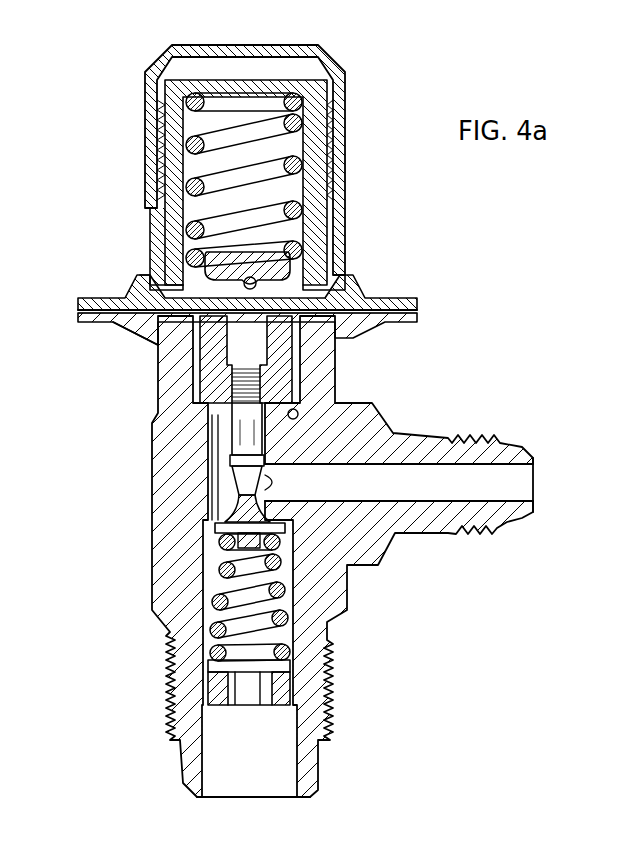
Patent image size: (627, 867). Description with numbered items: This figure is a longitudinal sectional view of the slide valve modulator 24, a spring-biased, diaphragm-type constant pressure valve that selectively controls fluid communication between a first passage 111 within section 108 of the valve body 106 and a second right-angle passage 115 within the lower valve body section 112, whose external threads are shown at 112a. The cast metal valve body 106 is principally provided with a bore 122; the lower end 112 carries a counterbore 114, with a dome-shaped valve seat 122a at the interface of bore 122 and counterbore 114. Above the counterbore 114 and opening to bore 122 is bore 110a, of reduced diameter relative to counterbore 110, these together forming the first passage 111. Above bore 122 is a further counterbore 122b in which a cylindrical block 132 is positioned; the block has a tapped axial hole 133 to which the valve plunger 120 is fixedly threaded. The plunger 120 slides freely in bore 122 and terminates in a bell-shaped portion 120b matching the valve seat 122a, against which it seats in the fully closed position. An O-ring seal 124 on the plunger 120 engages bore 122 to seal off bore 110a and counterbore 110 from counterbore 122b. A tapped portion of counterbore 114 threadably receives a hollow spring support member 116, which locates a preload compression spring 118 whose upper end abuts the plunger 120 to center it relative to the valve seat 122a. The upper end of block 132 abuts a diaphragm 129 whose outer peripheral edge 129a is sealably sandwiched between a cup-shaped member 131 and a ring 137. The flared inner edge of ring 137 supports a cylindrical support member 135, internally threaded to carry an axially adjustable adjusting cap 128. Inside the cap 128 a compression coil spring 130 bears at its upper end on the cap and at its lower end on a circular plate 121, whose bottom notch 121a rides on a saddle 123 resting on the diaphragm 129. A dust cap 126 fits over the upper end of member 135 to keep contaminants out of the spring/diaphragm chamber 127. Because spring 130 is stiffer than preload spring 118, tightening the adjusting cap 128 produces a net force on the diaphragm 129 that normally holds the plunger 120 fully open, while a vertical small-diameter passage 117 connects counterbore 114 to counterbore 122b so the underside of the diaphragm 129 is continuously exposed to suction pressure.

The slide valve modulator 24 is at (504, 347).
The valve body 106 is at (389, 405).
The valve body section 108 is at (512, 457).
The counterbore 110 is at (424, 444).
The bore 110a is at (330, 484).
The first passage 111 is at (500, 487).
The valve body section 112 is at (320, 737).
The external threads 112a is at (335, 708).
The counterbore 114 is at (205, 796).
The second right angle passage 115 is at (300, 792).
The hollow spring support member 116 is at (215, 682).
The vertical small diameter passage 117 is at (210, 421).
The preload compression spring 118 is at (205, 622).
The valve plunger 120 is at (245, 490).
The bell-shaped portion 120b is at (226, 537).
The circular plate 121 is at (185, 258).
The notch 121a is at (300, 266).
The bore 122 is at (234, 436).
The valve seat 122a is at (236, 506).
The counterbore 122b is at (300, 405).
The saddle 123 is at (200, 282).
The O-ring seal 124 is at (240, 461).
The dust cap 126 is at (340, 145).
The spring/diaphragm chamber 127 is at (215, 70).
The adjusting cap 128 is at (300, 86).
The diaphragm 129 is at (358, 292).
The outer peripheral edge 129a is at (420, 309).
The compression coil spring 130 is at (215, 133).
The cup-shaped member 131 is at (420, 323).
The cylindrical block 132 is at (215, 355).
The axial hole 133 is at (165, 343).
The cylindrical support member 135 is at (342, 232).
The ring 137 is at (405, 296).